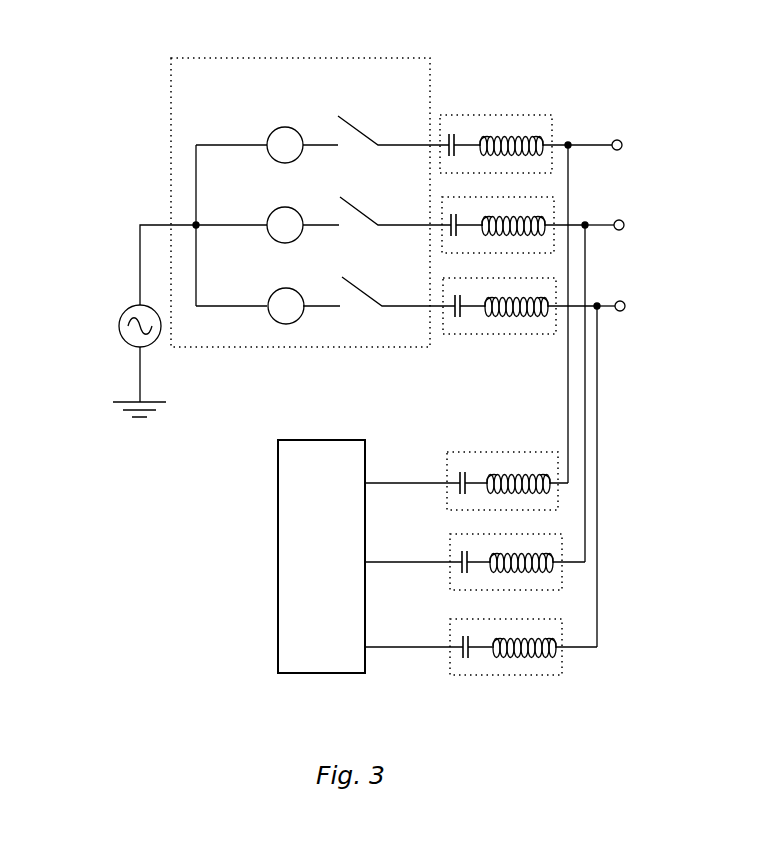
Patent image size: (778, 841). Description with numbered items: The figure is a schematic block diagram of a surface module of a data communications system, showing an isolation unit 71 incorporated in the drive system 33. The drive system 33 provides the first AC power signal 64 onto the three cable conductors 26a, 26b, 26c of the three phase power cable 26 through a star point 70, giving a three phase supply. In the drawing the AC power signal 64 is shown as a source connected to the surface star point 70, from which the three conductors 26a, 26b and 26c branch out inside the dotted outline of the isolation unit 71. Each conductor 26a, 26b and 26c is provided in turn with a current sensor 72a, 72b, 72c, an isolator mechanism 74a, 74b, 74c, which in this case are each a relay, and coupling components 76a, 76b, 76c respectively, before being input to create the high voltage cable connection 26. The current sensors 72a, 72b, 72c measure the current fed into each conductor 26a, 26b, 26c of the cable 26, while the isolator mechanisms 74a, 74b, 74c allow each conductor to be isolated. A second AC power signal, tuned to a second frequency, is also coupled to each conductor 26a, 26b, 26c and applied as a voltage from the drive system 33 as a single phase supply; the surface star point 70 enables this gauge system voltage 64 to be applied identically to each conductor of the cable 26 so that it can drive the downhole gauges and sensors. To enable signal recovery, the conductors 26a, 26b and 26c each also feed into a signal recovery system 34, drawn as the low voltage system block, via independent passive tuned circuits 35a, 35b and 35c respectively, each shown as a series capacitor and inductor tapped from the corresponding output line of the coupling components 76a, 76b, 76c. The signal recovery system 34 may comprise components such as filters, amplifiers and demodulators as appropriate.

The drive system 33 is at (117, 110).
The isolation unit 71 is at (205, 56).
The star point 70 is at (194, 223).
The first AC power signal 64 is at (121, 342).
The cable conductor 26a is at (217, 142).
The cable conductor 26b is at (230, 217).
The cable conductor 26c is at (232, 299).
The current sensor 72a is at (288, 140).
The current sensor 72b is at (289, 220).
The current sensor 72c is at (290, 301).
The isolator mechanism 74a is at (346, 122).
The isolator mechanism 74b is at (356, 205).
The isolator mechanism 74c is at (358, 282).
The coupling components 76a is at (481, 125).
The coupling components 76b is at (478, 212).
The coupling components 76c is at (472, 293).
The three phase power cable 26 is at (641, 243).
The signal recovery system 34 is at (277, 590).
The passive tuned circuit 35a is at (478, 470).
The passive tuned circuit 35b is at (478, 553).
The passive tuned circuit 35c is at (478, 637).